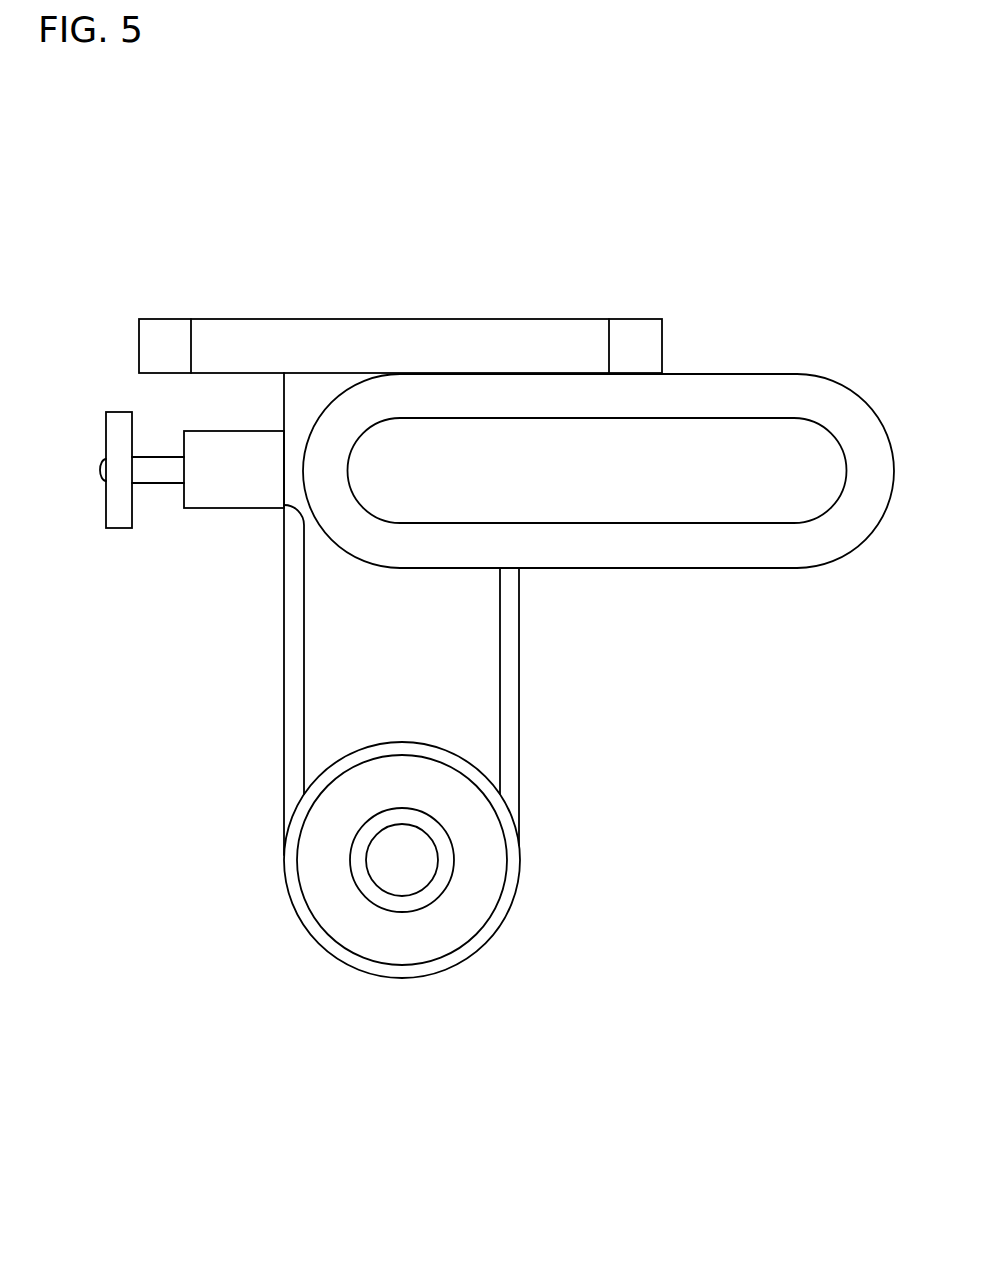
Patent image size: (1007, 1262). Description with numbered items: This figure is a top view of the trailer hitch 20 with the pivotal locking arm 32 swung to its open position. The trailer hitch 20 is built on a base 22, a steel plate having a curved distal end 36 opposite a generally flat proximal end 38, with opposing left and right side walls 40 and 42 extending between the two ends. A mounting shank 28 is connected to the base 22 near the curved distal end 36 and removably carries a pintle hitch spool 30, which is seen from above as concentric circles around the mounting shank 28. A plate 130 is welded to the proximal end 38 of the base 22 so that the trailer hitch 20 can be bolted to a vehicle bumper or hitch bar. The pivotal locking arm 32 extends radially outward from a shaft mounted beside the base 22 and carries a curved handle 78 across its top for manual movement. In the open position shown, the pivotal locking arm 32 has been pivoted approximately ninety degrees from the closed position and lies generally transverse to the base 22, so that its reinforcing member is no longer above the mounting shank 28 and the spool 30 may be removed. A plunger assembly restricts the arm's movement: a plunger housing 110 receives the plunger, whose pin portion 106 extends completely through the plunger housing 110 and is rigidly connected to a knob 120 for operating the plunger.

The trailer hitch 20 is at (250, 268).
The base 22 is at (391, 614).
The mounting shank 28 is at (453, 873).
The pintle hitch spool 30 is at (457, 919).
The pivotal locking arm 32 is at (778, 373).
The curved distal end 36 is at (355, 968).
The proximal end 38 is at (328, 372).
The left side wall 40 is at (283, 713).
The right side wall 42 is at (519, 631).
The curved handle 78 is at (827, 430).
The pin portion 106 is at (163, 483).
The plunger housing 110 is at (230, 508).
The knob 120 is at (113, 528).
The plate 130 is at (535, 320).